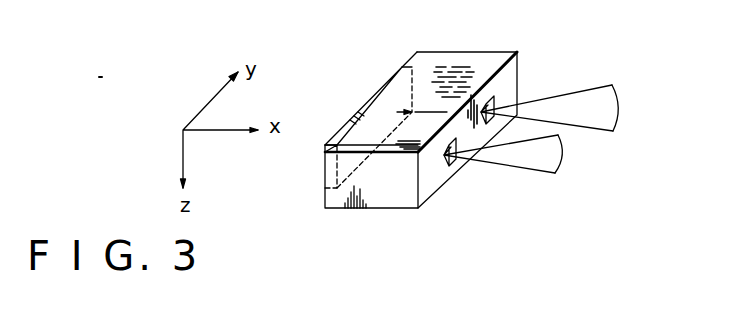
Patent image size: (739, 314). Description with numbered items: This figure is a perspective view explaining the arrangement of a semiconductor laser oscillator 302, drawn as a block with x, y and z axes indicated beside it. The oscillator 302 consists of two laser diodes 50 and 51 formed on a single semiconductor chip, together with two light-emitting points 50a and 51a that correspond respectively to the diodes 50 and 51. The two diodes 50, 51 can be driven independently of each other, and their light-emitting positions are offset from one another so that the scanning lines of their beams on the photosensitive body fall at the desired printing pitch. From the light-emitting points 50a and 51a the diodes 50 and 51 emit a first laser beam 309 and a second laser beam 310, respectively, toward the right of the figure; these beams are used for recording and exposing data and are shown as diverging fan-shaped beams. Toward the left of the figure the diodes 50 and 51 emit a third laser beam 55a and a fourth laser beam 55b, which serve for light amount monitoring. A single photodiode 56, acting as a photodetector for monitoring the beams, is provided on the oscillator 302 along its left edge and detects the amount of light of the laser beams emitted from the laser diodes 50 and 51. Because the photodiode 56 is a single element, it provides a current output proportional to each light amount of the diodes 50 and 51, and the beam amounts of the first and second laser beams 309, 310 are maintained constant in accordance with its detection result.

The semiconductor laser oscillator 302 is at (472, 52).
The photodiode 56 is at (366, 100).
The third laser beam 55a is at (427, 111).
The fourth laser beam 55b is at (392, 160).
The laser diode 50 is at (492, 72).
The light-emitting point 50a is at (506, 100).
The laser diode 51 is at (448, 166).
The light-emitting point 51a is at (452, 167).
The first laser beam 309 is at (597, 97).
The second laser beam 310 is at (522, 160).